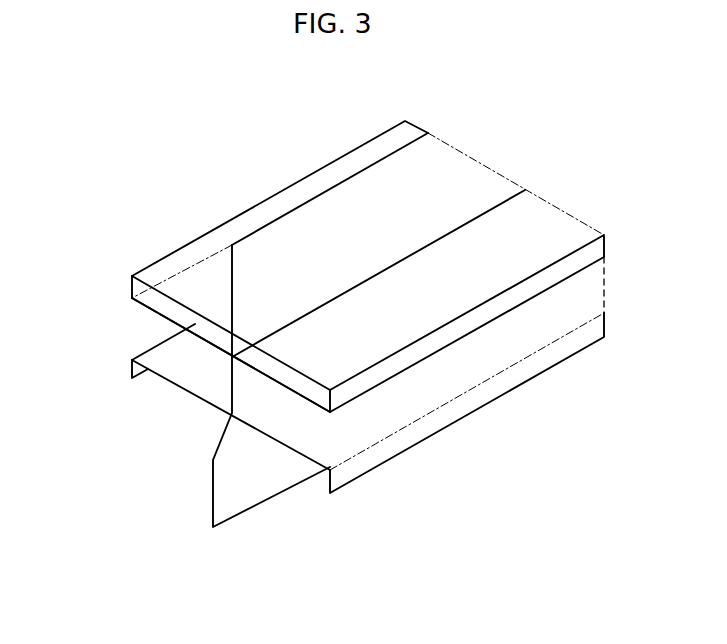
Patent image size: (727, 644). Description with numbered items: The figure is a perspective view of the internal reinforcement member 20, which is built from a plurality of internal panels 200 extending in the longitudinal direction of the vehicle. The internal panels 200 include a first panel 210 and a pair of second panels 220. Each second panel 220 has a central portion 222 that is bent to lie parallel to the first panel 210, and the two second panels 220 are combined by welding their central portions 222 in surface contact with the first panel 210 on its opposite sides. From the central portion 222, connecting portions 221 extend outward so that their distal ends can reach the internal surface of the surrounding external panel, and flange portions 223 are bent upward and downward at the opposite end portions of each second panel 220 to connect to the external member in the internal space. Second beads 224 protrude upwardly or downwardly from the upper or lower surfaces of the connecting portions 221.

The internal reinforcement member 20 is at (492, 92).
The internal panels 200 is at (336, 370).
The first panel 210 is at (300, 232).
The second panel 220 is at (143, 350).
The connecting portions 221 is at (183, 298).
The central portion 222 is at (234, 380).
The flange portions 223 is at (198, 248).
The second beads 224 is at (340, 178).